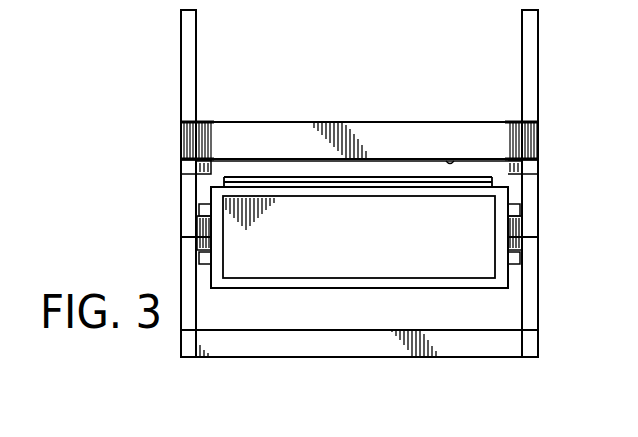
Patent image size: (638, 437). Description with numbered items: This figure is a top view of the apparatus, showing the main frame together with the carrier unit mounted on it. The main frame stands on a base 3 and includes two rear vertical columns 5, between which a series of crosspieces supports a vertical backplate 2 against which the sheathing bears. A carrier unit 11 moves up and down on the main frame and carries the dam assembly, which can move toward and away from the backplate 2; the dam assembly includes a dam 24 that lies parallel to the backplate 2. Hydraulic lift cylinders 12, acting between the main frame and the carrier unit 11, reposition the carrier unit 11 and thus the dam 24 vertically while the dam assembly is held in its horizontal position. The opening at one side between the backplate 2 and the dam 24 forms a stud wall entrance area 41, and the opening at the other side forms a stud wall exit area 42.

The vertical backplate 2 is at (451, 159).
The base 3 is at (181, 55).
The rear vertical columns 5 is at (272, 128).
The carrier unit 11 is at (464, 292).
The hydraulic lift cylinders 12 is at (197, 250).
The dam 24 is at (406, 177).
The stud wall entrance area 41 is at (198, 176).
The stud wall exit area 42 is at (518, 176).